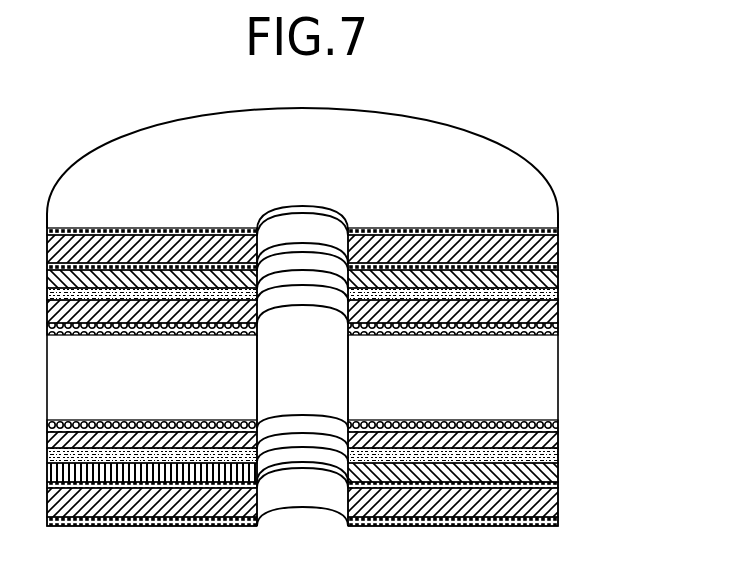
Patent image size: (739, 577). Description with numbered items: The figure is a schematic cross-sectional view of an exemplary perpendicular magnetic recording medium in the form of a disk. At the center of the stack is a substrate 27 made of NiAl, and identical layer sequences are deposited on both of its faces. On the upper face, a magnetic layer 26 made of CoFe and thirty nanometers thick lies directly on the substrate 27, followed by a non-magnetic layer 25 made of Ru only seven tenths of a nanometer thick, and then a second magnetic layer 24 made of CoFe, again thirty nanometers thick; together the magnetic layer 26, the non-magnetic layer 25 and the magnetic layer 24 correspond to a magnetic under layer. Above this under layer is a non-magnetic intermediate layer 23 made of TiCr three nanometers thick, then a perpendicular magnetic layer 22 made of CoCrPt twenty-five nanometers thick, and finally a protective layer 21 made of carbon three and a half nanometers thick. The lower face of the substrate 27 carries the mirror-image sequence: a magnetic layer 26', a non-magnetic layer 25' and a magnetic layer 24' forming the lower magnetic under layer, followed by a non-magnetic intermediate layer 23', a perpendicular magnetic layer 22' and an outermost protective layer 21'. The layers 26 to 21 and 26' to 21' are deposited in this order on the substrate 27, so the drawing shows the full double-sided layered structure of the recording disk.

The protective layer 21 is at (332, 222).
The perpendicular magnetic layer 22 is at (332, 249).
The non-magnetic intermediate layer 23 is at (348, 262).
The magnetic layer 24 is at (332, 287).
The non-magnetic layer 25 is at (332, 313).
The magnetic layer 26 is at (342, 341).
The substrate 27 is at (545, 378).
The magnetic layer 26' is at (342, 424).
The non-magnetic layer 25' is at (343, 443).
The magnetic layer 24' is at (363, 464).
The non-magnetic intermediate layer 23' is at (362, 485).
The perpendicular magnetic layer 22' is at (342, 502).
The protective layer 21' is at (345, 521).